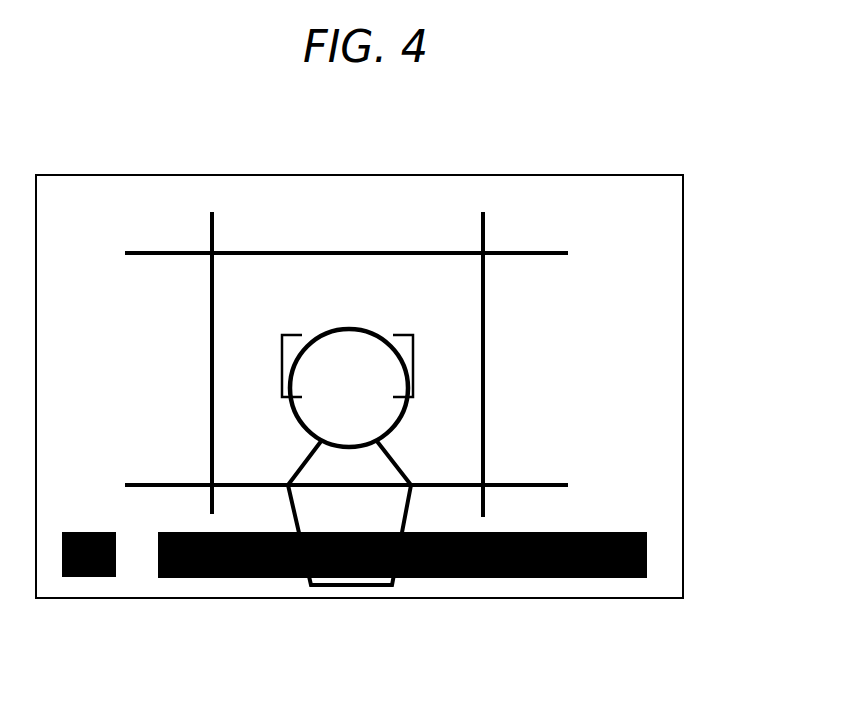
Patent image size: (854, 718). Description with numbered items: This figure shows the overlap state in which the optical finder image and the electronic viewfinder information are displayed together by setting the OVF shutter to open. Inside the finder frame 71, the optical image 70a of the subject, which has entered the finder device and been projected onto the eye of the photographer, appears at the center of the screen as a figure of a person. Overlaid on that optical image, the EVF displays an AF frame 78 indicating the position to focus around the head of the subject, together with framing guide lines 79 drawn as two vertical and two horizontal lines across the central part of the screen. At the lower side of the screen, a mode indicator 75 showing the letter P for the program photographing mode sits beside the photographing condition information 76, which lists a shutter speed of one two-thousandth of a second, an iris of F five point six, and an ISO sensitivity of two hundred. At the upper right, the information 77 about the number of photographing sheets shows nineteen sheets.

The finder frame 71 is at (683, 402).
The framing guide lines 79 is at (294, 251).
The optical image 70a is at (390, 463).
The AF frame 78 is at (289, 334).
The shooting mode display 75 is at (89, 578).
The photographing condition information 76 is at (467, 579).
The information about number of photographing sheets 77 is at (655, 210).